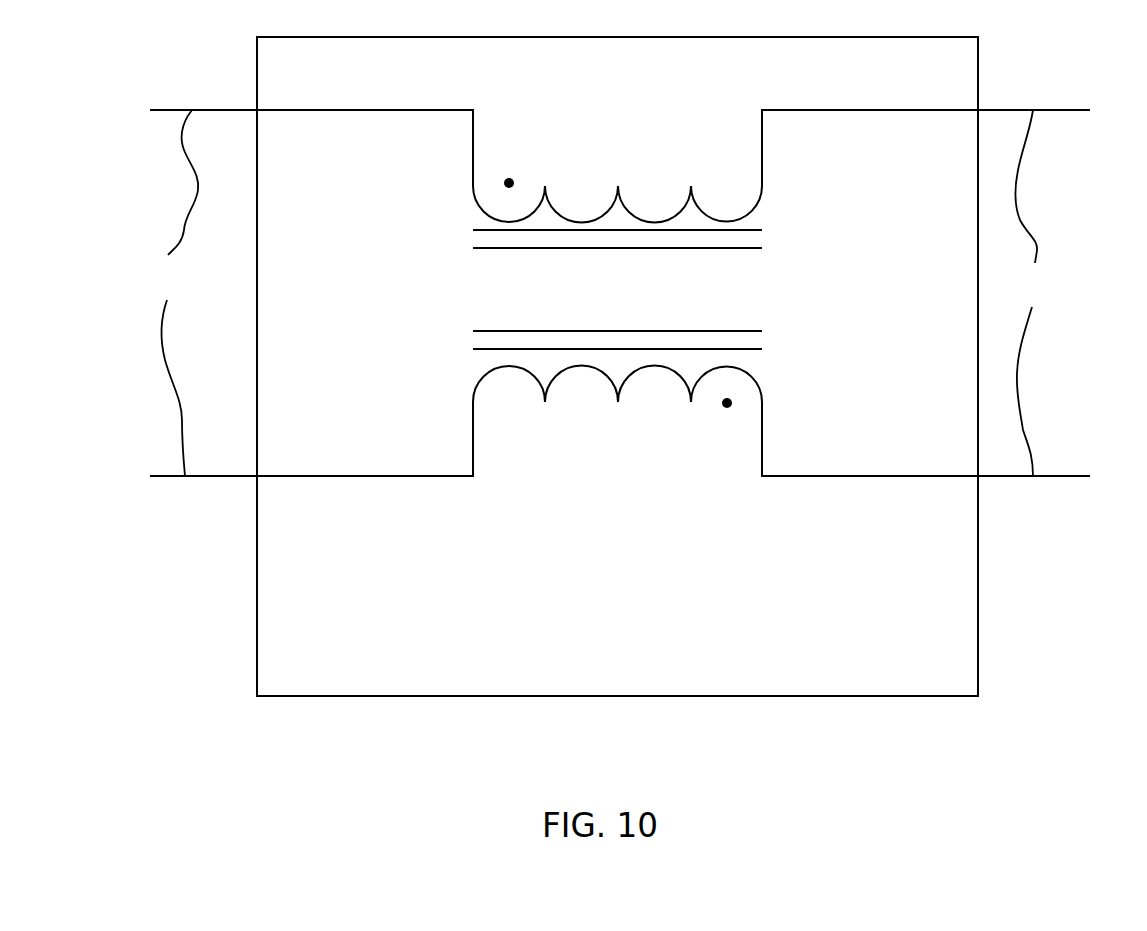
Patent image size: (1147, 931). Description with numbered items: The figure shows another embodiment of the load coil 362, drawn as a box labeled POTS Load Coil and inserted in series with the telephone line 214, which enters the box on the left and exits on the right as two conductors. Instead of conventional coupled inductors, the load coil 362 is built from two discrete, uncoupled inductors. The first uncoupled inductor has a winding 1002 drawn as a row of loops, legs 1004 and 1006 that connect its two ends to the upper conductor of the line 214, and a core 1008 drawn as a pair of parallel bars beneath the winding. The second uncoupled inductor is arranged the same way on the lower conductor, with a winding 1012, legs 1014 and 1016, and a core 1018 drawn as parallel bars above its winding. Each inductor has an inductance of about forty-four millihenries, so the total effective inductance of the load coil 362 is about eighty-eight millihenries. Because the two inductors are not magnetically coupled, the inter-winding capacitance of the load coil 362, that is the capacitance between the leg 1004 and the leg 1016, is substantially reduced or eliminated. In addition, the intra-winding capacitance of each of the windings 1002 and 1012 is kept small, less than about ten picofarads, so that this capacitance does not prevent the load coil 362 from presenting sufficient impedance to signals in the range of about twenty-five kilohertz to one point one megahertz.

The twisted pair telephone line 214 is at (603, 293).
The load coil 362 is at (978, 615).
The winding 1002 is at (757, 205).
The leg 1004 is at (473, 145).
The leg 1006 is at (762, 127).
The core 1008 is at (745, 250).
The winding 1012 is at (757, 375).
The leg 1014 is at (473, 449).
The leg 1016 is at (762, 420).
The core 1018 is at (490, 331).